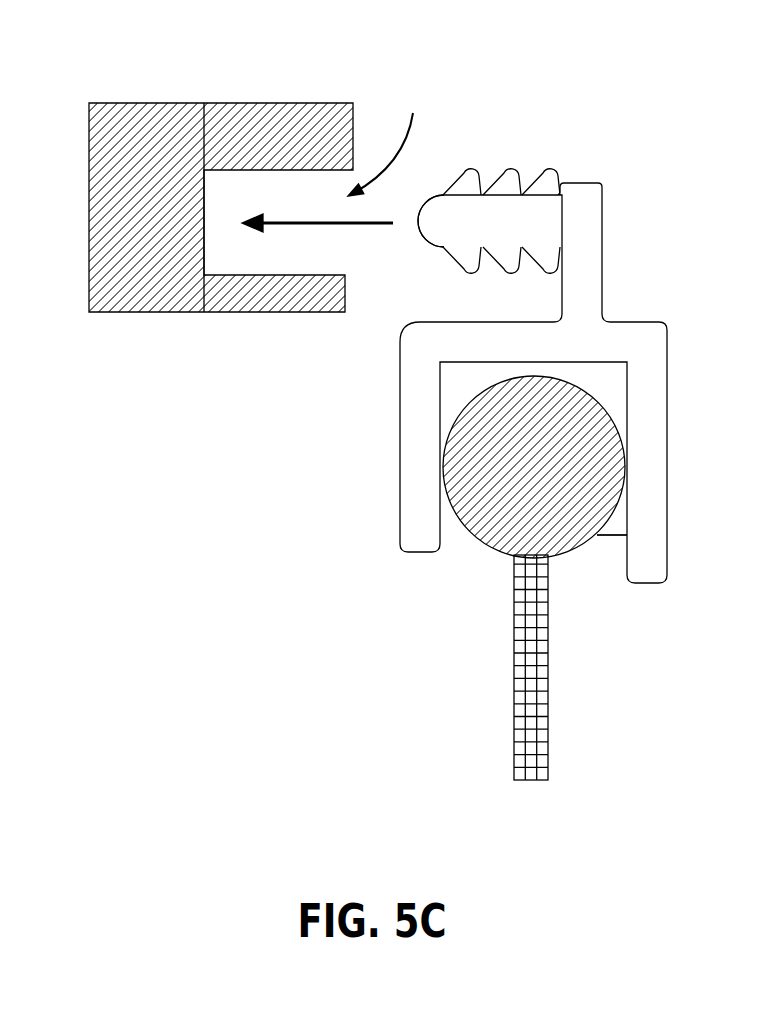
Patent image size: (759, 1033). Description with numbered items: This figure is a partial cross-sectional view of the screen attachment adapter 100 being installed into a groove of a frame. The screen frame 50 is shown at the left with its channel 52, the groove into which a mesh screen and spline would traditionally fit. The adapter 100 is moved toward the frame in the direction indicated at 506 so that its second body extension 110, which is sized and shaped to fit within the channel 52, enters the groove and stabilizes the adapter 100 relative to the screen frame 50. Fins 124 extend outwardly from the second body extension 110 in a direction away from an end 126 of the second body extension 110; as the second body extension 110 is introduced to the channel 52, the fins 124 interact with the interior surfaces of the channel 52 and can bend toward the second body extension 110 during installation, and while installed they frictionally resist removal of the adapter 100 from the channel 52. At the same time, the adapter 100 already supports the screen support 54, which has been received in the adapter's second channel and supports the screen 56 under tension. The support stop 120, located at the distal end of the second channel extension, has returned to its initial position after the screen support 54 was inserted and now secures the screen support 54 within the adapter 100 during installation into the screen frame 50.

The screen frame 50 is at (295, 132).
The channel 52 is at (381, 140).
The direction 506 is at (302, 229).
The adapter 100 is at (588, 240).
The second body extension 110 is at (538, 215).
The end of the second body extension 126 is at (418, 225).
The fins 124 is at (470, 175).
The screen support 54 is at (503, 525).
The screen 56 is at (548, 713).
The support stop 120 is at (622, 551).